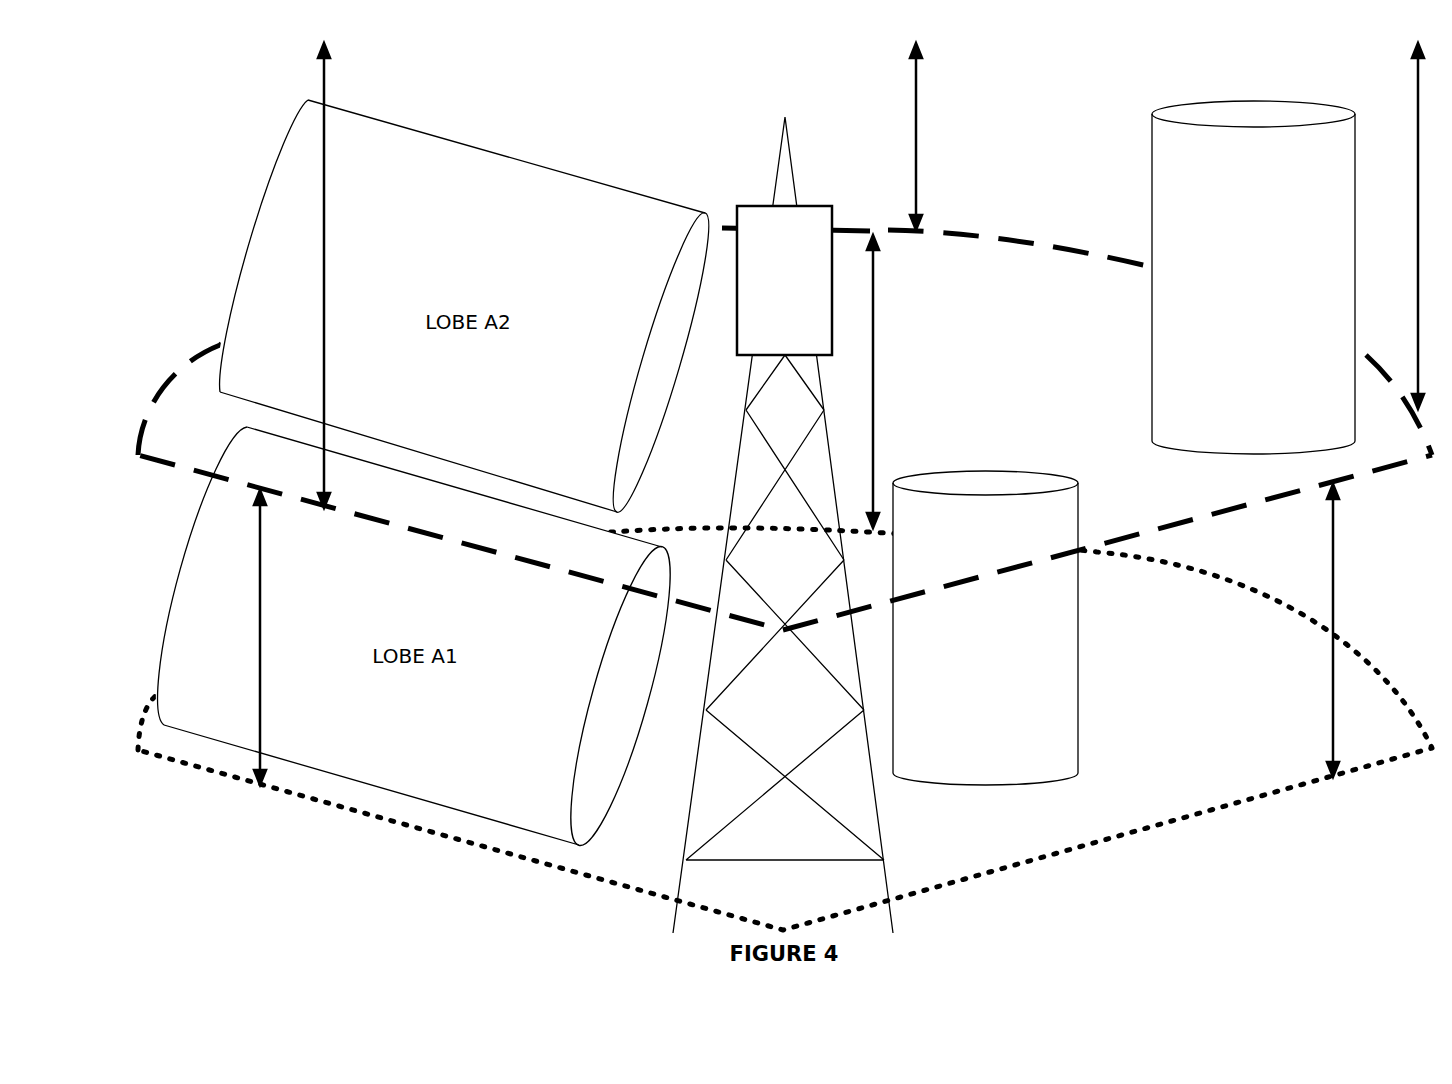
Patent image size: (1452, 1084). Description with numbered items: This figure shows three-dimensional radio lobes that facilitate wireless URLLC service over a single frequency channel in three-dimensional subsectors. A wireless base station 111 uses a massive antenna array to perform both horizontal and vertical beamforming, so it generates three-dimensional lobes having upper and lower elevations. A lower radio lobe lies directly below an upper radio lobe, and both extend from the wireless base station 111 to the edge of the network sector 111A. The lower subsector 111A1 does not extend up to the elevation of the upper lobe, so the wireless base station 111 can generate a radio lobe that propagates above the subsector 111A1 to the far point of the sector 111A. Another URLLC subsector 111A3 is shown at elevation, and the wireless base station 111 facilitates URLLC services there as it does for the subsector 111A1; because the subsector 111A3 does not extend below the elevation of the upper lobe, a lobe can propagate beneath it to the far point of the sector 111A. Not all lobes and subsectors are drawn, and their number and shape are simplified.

The wireless base station 111 is at (793, 182).
The network sector 111A is at (785, 729).
The subsector 111A1 is at (985, 628).
The subsector 111A3 is at (1253, 277).